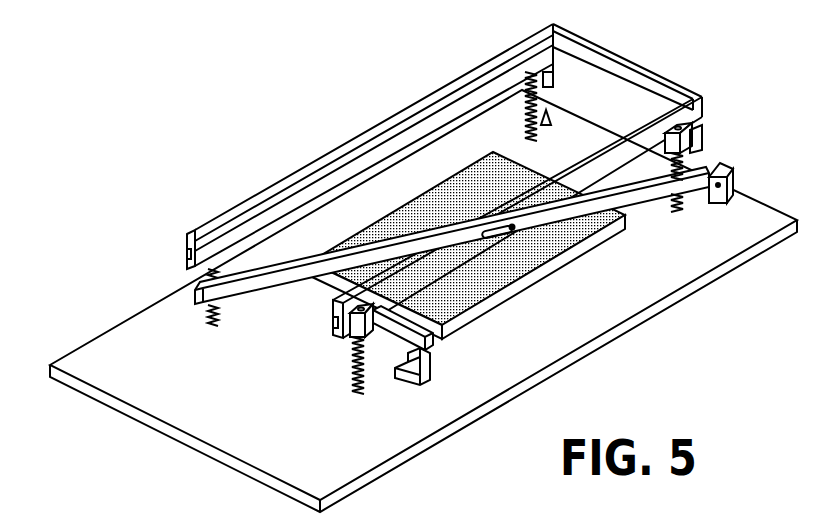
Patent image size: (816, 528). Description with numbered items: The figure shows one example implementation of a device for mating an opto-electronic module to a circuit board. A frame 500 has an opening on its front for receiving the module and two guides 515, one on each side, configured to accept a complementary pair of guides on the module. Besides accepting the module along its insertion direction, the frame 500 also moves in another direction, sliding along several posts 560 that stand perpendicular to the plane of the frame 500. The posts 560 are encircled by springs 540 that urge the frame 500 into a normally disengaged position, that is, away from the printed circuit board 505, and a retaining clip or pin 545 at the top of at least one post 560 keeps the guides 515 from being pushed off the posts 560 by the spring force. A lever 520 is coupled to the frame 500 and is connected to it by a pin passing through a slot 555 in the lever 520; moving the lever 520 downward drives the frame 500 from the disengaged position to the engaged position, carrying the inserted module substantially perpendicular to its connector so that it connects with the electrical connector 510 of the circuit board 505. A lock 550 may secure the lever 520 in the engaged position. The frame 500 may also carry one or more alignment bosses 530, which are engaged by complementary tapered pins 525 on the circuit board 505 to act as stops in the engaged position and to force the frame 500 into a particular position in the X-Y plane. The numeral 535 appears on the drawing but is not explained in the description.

The frame 500 is at (641, 49).
The printed circuit board 505 is at (658, 307).
The electrical connector 510 is at (517, 290).
The guides 515 is at (187, 252).
The lever 520 is at (242, 295).
The tapered pins 525 is at (573, 131).
The alignment boss 530 is at (545, 78).
The end block 535 is at (737, 172).
The springs 540 is at (353, 378).
The retaining clip or pin 545 is at (390, 315).
The lock 550 is at (417, 385).
The slot 555 is at (512, 232).
The posts 560 is at (358, 395).